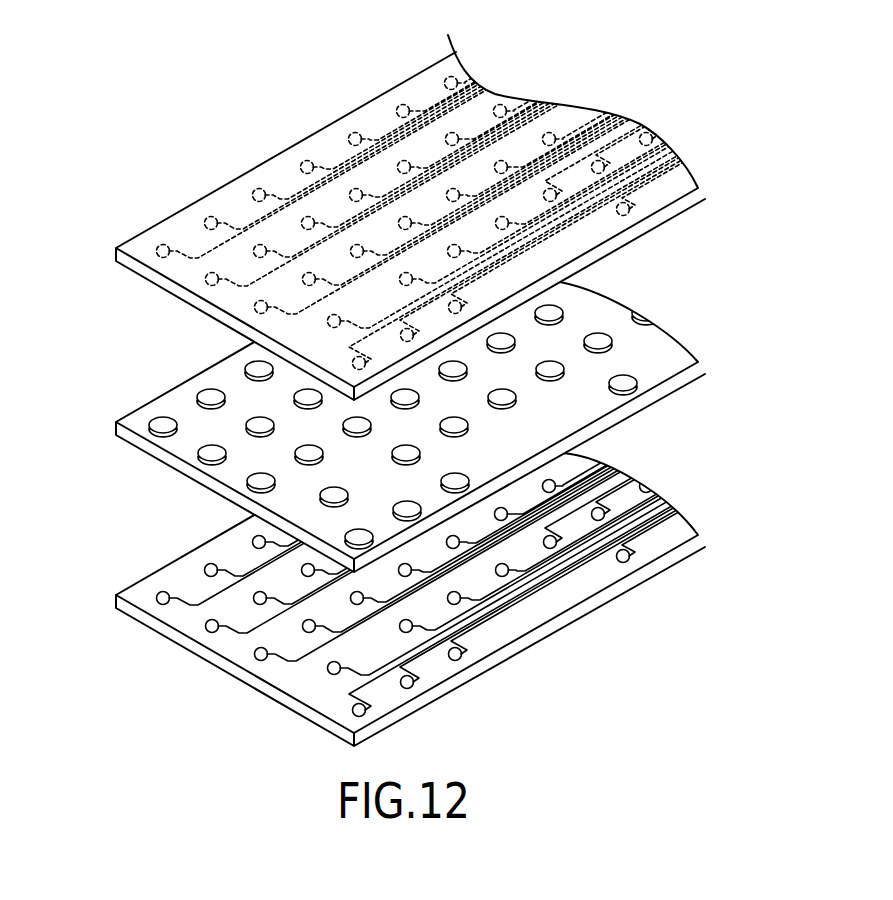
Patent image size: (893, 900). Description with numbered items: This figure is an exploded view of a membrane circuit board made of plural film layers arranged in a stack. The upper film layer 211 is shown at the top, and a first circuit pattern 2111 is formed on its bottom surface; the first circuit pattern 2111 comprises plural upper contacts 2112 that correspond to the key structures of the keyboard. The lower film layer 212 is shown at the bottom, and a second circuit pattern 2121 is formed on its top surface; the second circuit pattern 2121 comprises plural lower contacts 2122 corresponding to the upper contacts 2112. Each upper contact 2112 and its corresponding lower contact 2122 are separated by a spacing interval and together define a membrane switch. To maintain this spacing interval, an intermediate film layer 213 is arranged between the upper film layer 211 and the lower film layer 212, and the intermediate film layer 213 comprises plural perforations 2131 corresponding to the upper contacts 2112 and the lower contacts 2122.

The upper film layer 211 is at (133, 141).
The first circuit pattern 2111 is at (272, 171).
The upper contacts 2112 is at (399, 104).
The intermediate film layer 213 is at (667, 335).
The perforations 2131 is at (599, 336).
The lower film layer 212 is at (167, 654).
The second circuit pattern 2121 is at (290, 673).
The lower contacts 2122 is at (260, 592).